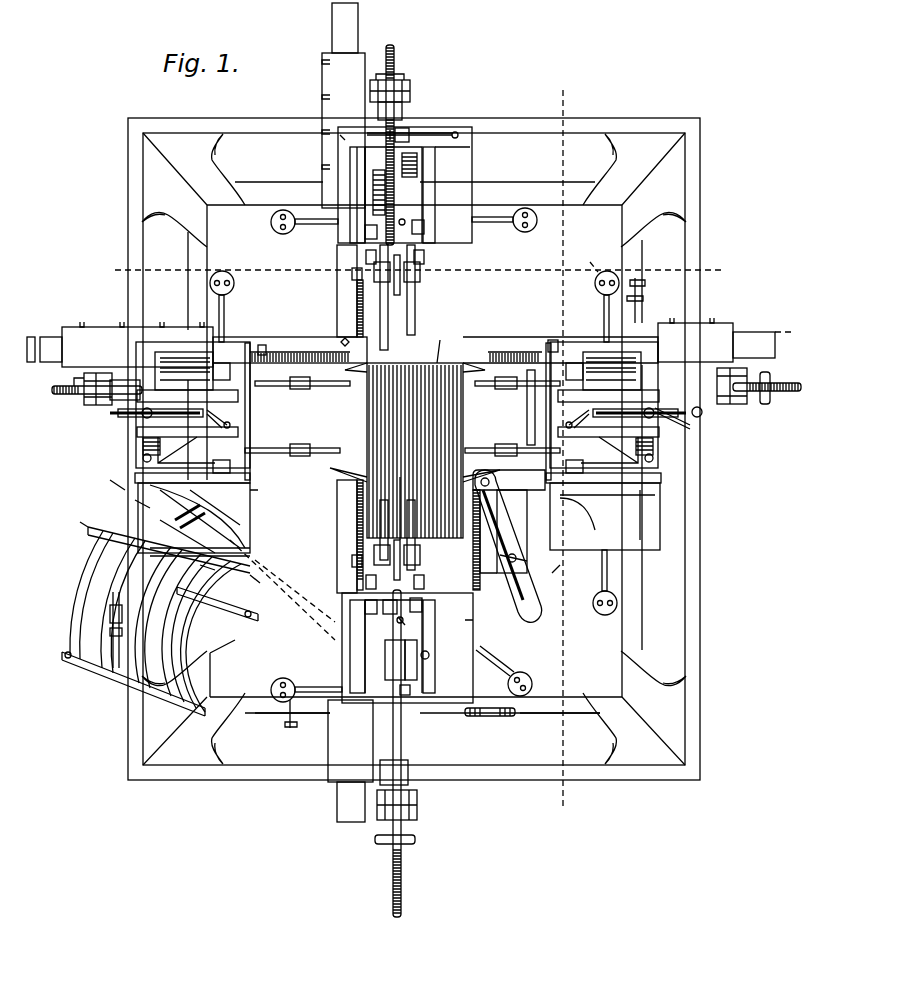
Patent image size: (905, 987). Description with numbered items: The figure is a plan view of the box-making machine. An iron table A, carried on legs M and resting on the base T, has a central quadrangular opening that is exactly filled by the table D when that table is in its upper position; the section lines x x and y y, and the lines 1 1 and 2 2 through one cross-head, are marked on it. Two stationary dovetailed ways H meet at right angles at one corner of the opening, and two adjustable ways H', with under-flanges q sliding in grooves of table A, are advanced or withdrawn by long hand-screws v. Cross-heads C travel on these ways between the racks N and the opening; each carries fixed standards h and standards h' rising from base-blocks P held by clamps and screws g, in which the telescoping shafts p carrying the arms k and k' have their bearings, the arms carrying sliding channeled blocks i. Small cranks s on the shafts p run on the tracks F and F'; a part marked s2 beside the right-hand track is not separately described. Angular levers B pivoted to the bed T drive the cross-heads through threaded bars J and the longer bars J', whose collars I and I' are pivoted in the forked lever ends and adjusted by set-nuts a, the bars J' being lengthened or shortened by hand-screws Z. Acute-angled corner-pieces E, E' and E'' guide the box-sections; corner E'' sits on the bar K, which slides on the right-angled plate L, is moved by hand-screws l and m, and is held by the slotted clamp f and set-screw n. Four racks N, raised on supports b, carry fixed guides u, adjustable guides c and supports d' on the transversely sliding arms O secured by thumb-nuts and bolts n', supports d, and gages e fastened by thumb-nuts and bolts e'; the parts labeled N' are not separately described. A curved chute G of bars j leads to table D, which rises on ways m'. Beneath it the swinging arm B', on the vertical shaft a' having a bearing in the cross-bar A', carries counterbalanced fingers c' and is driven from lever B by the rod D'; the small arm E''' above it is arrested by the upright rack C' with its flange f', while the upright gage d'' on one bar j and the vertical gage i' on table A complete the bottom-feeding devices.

The iron table A is at (414, 451).
The cross-bar A' is at (423, 723).
The base T is at (414, 449).
The legs M is at (414, 449).
The section line x x is at (417, 270).
The section line y y is at (560, 451).
The section line 1 1 is at (590, 260).
The section line 2 2 is at (790, 331).
The track F is at (290, 321).
The track F' is at (440, 464).
The stationary dovetailed ways H is at (192, 182).
The adjustable dovetailed ways H' is at (556, 577).
The stop s2 is at (550, 347).
The table D is at (415, 450).
The fixed acute-angled corner E is at (363, 360).
The adjustable acute-angled corner E' is at (407, 411).
The adjustable corner E'' is at (450, 499).
The small horizontal arm E''' is at (456, 523).
The arm k is at (407, 402).
The arm k' is at (402, 407).
The channeled block i is at (403, 413).
The telescoping shaft p is at (527, 410).
The fixed standard h is at (362, 419).
The standard h' is at (427, 419).
The crank s is at (310, 417).
The cross-head C is at (397, 417).
The threaded bar J is at (224, 225).
The threaded bar J' is at (597, 641).
The collar I is at (238, 238).
The collar I' is at (562, 597).
The hand-screw Z is at (572, 608).
The set-nut a is at (241, 223).
The angular lever B is at (392, 441).
The adjustable rack N is at (397, 415).
The carriage frame N' is at (417, 379).
The transversely sliding arm O is at (398, 420).
The horizontal support d is at (398, 420).
The horizontal support d' is at (398, 553).
The adjustable upright gage d'' is at (107, 630).
The vertical shaft a' is at (419, 163).
The gage e is at (398, 419).
The thumb-nut and bolt e' is at (398, 409).
The hand-screw m is at (490, 724).
The ways m' is at (412, 129).
The fixed upright guide u is at (398, 417).
The clamp and screw g is at (398, 420).
The adjustable upright guide c is at (398, 414).
The counterbalanced pivoted finger c' is at (185, 540).
The base-block P is at (397, 478).
The flange q is at (398, 517).
The set-screw n is at (519, 553).
The thumb-nut and bolt n' is at (399, 577).
The support b is at (409, 455).
The hand-screw v is at (467, 508).
The swinging arm B' is at (389, 452).
The upright rack C' is at (177, 551).
The rod D' is at (672, 425).
The hand-screw l is at (605, 516).
The bar K is at (509, 480).
The right-angled plate L is at (509, 531).
The slotted clamp f is at (508, 551).
The right-angled flange f' is at (161, 547).
The vertical gage i' is at (217, 609).
The curved chute G is at (133, 623).
The chute bar j is at (149, 625).